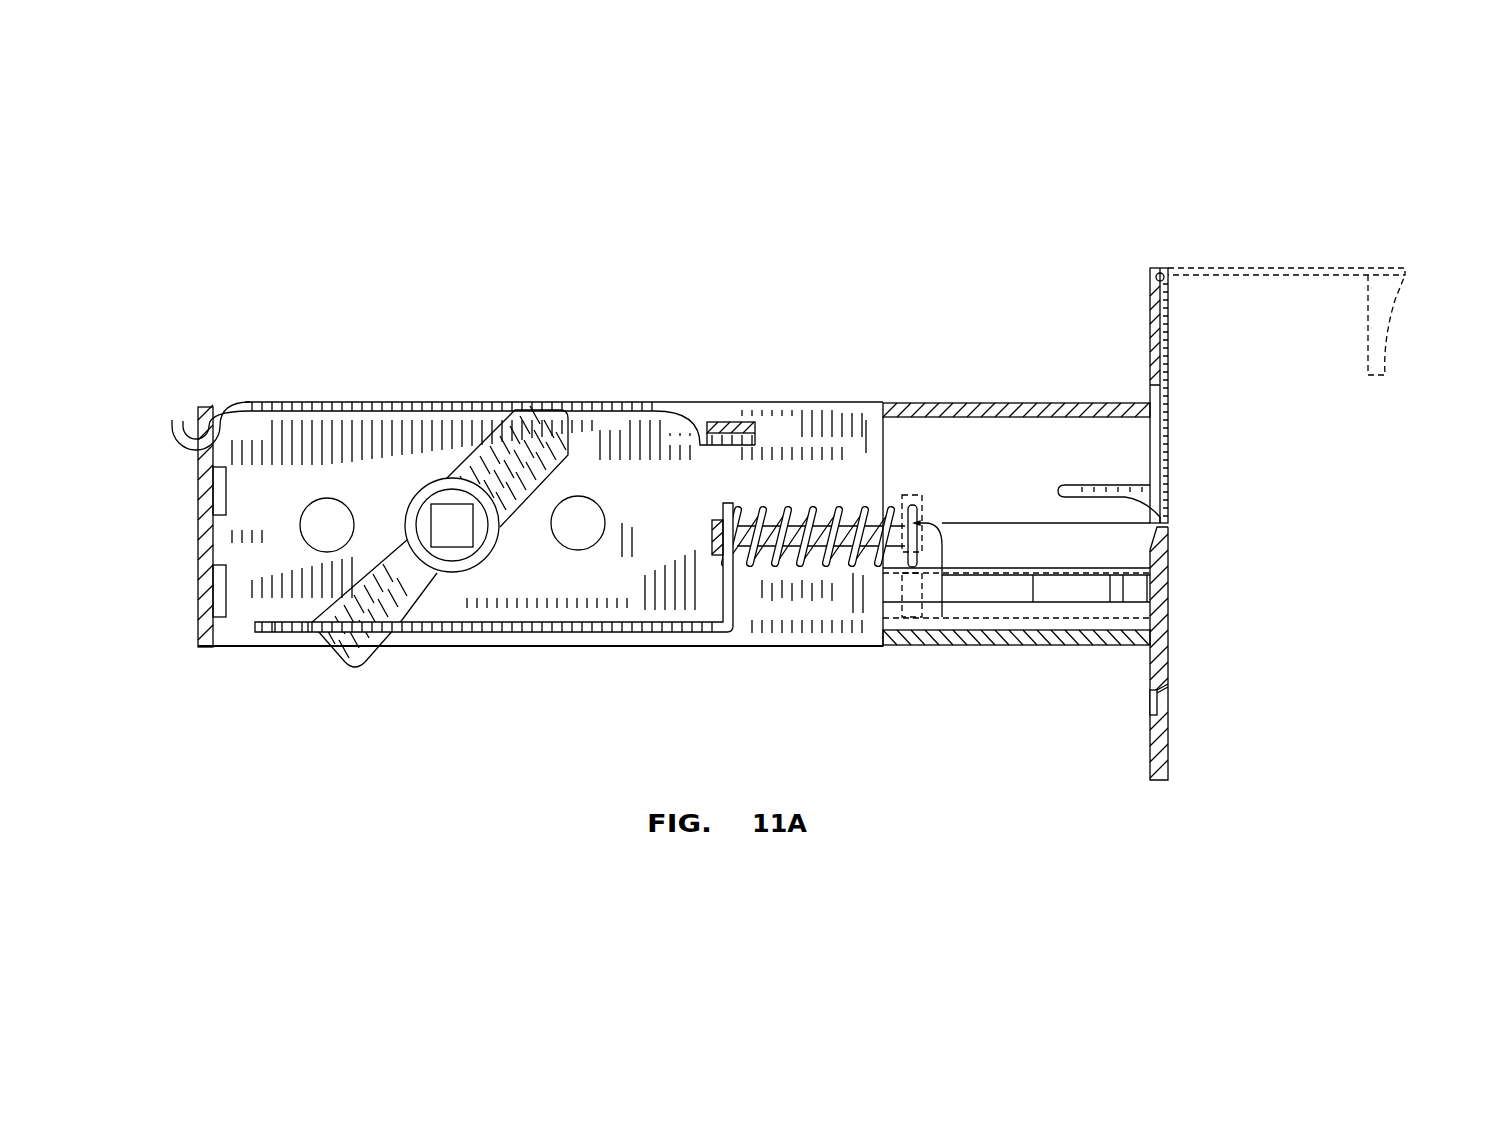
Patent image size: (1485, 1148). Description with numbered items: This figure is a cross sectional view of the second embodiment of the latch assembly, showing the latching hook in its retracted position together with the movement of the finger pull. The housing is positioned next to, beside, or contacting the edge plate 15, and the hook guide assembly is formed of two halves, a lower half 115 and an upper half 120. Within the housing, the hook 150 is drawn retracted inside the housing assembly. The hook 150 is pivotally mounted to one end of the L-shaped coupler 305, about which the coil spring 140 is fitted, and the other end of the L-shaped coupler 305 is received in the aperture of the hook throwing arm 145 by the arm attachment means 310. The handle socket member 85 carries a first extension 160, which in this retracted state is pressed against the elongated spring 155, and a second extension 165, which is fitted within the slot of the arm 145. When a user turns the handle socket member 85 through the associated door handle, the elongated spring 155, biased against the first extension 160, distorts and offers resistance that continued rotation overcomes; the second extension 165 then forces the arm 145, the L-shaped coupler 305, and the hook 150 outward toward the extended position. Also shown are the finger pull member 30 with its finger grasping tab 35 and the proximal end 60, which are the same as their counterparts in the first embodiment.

The elongated spring 155 is at (353, 403).
The first extension of the handle socket member 160 is at (423, 539).
The second extension of the handle socket member 165 is at (360, 662).
The handle socket member 85 is at (447, 510).
The hook throwing arm 145 is at (548, 640).
The arm attachment means 310 is at (717, 527).
The coil spring 140 is at (840, 515).
The upper half of the hook guide assembly 120 is at (915, 410).
The L-shaped coupler 305 is at (933, 560).
The hook 150 is at (1077, 593).
The lower half of the hook guide assembly 115 is at (1020, 640).
The finger grasping tab 35 is at (1060, 487).
The finger pull member 30 is at (1168, 425).
The proximal end 60 is at (1143, 377).
The edge plate 15 is at (1160, 743).